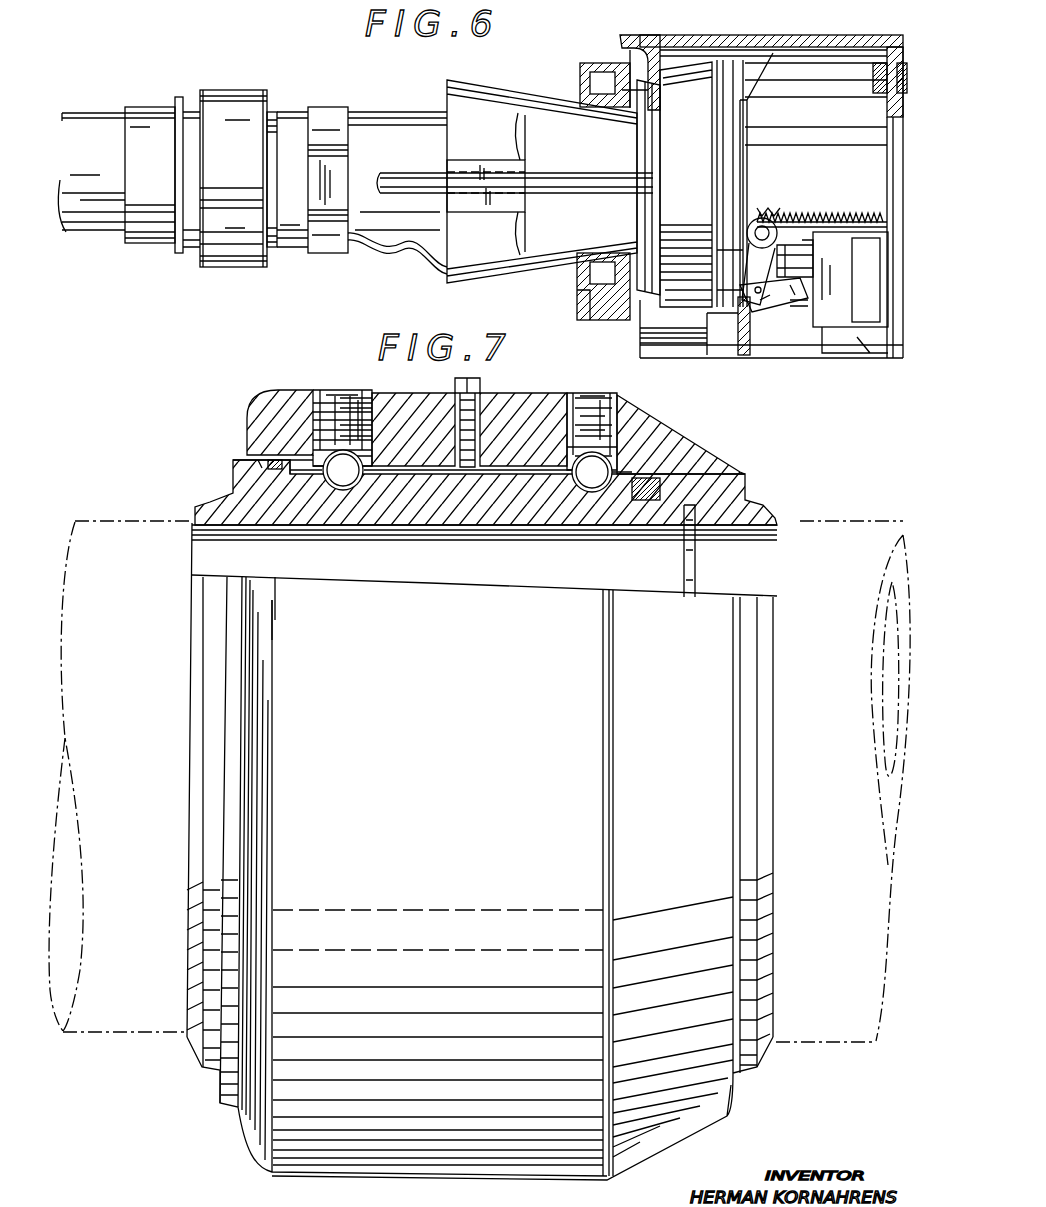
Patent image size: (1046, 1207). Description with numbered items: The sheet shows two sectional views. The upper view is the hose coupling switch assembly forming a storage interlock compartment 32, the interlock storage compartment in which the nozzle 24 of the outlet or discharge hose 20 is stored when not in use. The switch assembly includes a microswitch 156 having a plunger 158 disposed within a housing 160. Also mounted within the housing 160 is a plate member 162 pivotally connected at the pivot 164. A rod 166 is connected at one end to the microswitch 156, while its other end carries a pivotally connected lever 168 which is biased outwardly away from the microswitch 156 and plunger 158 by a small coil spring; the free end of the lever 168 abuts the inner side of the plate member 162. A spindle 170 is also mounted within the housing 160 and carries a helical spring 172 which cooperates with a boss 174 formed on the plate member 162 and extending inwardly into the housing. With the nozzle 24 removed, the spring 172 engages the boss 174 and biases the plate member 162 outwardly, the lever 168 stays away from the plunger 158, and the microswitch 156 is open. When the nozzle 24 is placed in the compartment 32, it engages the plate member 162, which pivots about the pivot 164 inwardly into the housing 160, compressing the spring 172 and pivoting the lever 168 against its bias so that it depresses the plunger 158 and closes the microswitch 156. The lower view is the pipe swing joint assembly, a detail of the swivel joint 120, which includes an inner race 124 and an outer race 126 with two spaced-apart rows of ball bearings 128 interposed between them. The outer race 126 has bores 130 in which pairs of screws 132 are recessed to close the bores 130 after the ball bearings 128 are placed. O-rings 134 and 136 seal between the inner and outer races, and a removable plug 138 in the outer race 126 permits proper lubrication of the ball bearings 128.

In FIG. 6, the outlet or discharge hose 20 is at (90, 236).
In FIG. 6, the nozzle 24 is at (573, 115).
In FIG. 6, the interlock storage compartment 32 is at (696, 34).
In FIG. 6, the microswitch 156 is at (878, 262).
In FIG. 6, the plunger 158 is at (770, 306).
In FIG. 6, the housing 160 is at (820, 40).
In FIG. 6, the plate member 162 is at (748, 140).
In FIG. 6, the pivotal connection 164 is at (752, 320).
In FIG. 6, the rod 166 is at (802, 302).
In FIG. 6, the lever 168 is at (757, 258).
In FIG. 6, the spindle 170 is at (878, 210).
In FIG. 6, the helical spring 172 is at (838, 210).
In FIG. 6, the boss 174 is at (758, 210).
In FIG. 7, the swivel joint 120 is at (238, 1126).
In FIG. 7, the inner race 124 is at (216, 504).
In FIG. 7, the outer race 126 is at (280, 404).
In FIG. 7, the ball bearings 128 is at (343, 492).
In FIG. 7, the bores 130 is at (305, 395).
In FIG. 7, the screws 132 is at (375, 428).
In FIG. 7, the O-ring 134 is at (272, 479).
In FIG. 7, the O-ring 136 is at (662, 462).
In FIG. 7, the removable plug 138 is at (484, 430).